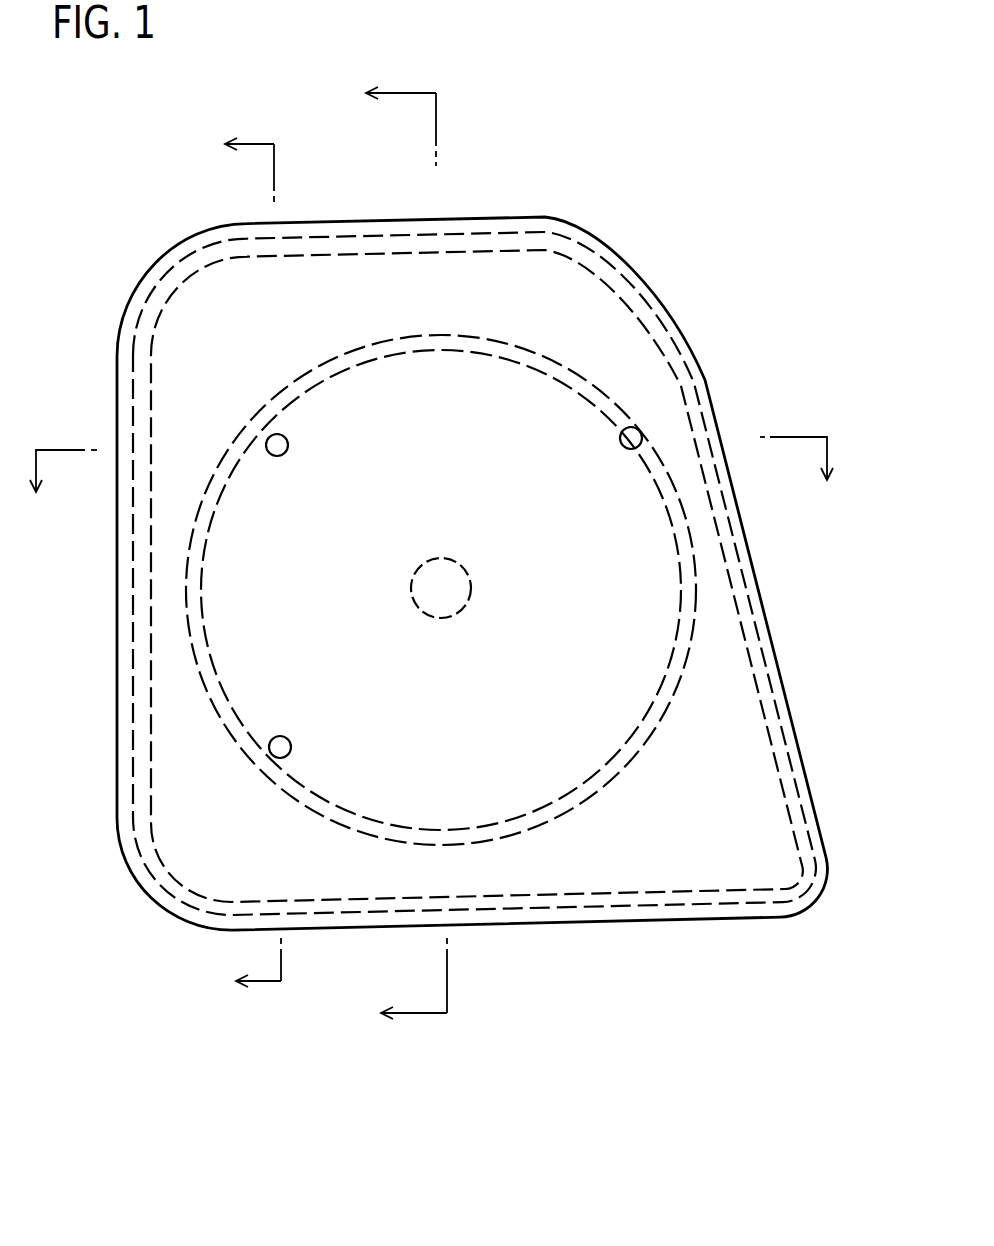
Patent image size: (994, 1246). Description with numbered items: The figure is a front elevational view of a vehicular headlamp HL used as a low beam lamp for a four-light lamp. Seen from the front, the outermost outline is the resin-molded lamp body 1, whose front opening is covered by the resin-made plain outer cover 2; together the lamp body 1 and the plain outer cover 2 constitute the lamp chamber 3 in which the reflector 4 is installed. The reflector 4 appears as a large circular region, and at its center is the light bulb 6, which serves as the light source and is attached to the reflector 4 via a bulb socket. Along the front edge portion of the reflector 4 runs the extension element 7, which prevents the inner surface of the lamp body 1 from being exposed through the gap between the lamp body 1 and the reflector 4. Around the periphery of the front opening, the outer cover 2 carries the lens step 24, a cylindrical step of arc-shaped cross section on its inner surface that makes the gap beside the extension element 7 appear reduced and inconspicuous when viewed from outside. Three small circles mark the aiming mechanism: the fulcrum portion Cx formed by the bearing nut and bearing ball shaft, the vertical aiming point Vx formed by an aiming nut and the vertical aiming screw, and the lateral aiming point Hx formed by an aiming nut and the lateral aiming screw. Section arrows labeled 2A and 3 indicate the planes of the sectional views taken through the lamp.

The lamp body 1 is at (663, 302).
The plain outer cover 2 is at (743, 865).
The lens step 24 is at (778, 750).
The reflector 4 is at (694, 635).
The light bulb 6 is at (440, 618).
The extension element 7 is at (587, 777).
The fulcrum portion Cx is at (277, 430).
The lateral aiming point Hx is at (634, 424).
The vertical aiming point Vx is at (272, 756).
The headlamp HL is at (594, 209).
The section line 2A is at (404, 554).
The lamp chamber 3 is at (252, 566).